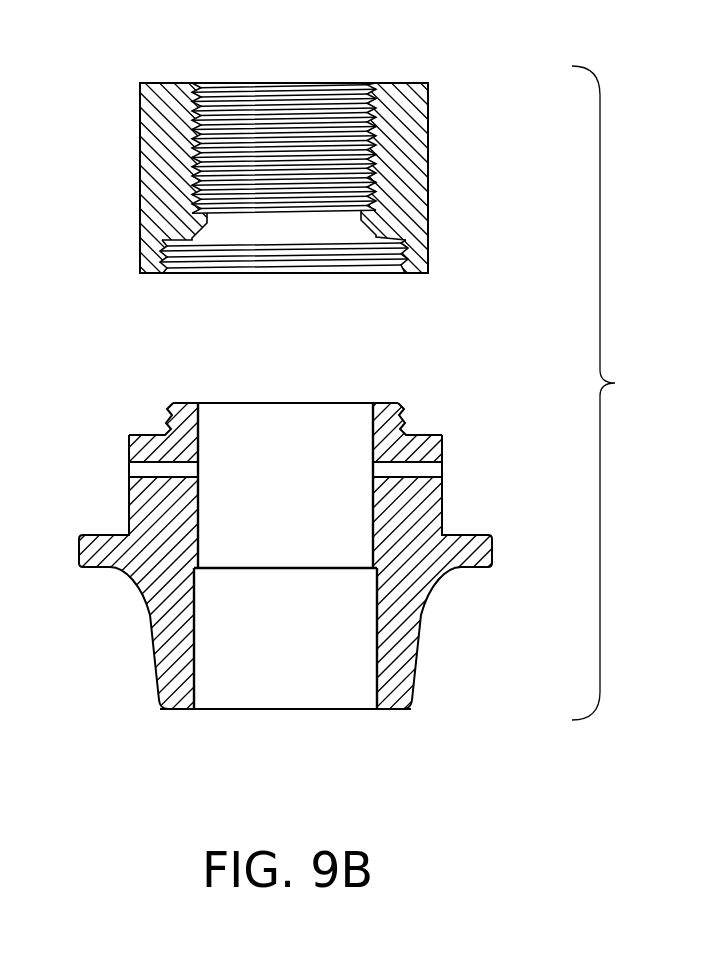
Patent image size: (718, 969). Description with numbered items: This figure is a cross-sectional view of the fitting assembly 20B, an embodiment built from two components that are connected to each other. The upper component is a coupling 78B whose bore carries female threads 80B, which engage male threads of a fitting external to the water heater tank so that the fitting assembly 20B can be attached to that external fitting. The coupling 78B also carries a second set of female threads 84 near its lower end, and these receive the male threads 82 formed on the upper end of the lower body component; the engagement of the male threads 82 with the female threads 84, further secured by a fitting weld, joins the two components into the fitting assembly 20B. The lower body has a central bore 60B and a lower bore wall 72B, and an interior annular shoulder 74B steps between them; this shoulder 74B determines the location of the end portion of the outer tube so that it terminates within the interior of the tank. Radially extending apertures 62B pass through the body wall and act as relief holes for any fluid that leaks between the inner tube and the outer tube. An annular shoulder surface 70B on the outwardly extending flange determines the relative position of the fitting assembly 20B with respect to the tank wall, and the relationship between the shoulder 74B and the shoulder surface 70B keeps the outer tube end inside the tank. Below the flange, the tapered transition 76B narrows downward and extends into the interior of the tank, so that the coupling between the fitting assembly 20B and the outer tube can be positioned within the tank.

The fitting assembly 20B is at (632, 393).
The bore of body 60B is at (198, 448).
The radially extending apertures 62B is at (432, 468).
The annular shoulder surface 70B is at (103, 535).
The lower bore wall 72B is at (194, 659).
The interior annular shoulder 74B is at (373, 568).
The tapered transition 76B is at (145, 615).
The coupling 78B is at (148, 102).
The female threads 80B is at (198, 128).
The male threads 82 is at (168, 411).
The female threads 84 is at (403, 258).